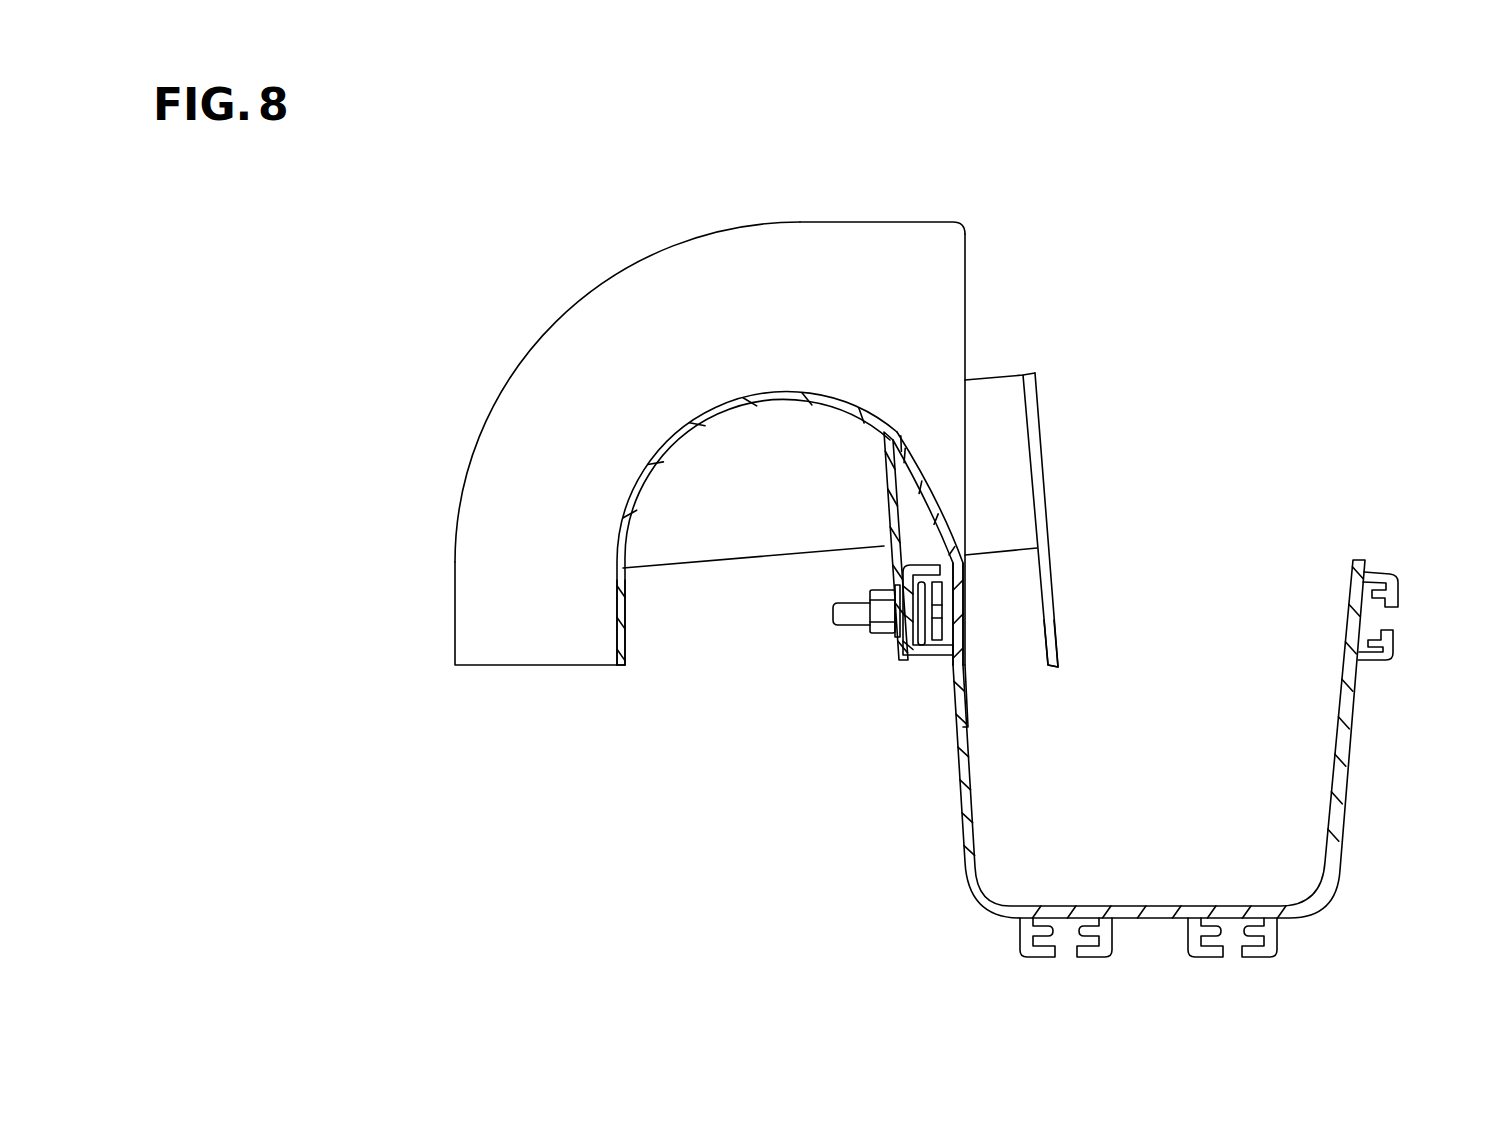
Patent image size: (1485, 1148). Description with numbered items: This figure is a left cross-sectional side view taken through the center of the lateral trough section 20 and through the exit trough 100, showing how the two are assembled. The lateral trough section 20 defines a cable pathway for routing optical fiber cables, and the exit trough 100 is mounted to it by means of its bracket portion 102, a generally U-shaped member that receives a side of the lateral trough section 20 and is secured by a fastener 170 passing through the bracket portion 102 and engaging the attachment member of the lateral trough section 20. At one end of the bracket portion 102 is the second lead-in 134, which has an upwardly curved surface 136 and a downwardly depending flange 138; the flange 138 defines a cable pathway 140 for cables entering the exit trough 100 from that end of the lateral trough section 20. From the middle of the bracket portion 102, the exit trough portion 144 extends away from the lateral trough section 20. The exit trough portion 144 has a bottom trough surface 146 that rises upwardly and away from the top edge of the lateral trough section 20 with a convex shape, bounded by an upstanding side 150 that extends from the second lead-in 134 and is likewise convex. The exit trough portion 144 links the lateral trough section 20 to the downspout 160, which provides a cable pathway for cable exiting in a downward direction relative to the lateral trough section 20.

The lateral trough section 20 is at (1345, 767).
The exit trough 100 is at (917, 222).
The bracket portion 102 is at (903, 660).
The second lead-in 134 is at (1035, 373).
The upwardly curved surface 136 is at (1003, 473).
The downwardly depending flange 138 is at (1055, 620).
The cable pathway 140 is at (1032, 665).
The exit trough portion 144 is at (838, 220).
The bottom trough surface 146 is at (905, 438).
The upstanding side 150 is at (965, 262).
The downspout 160 is at (624, 620).
The fastener 170 is at (847, 618).